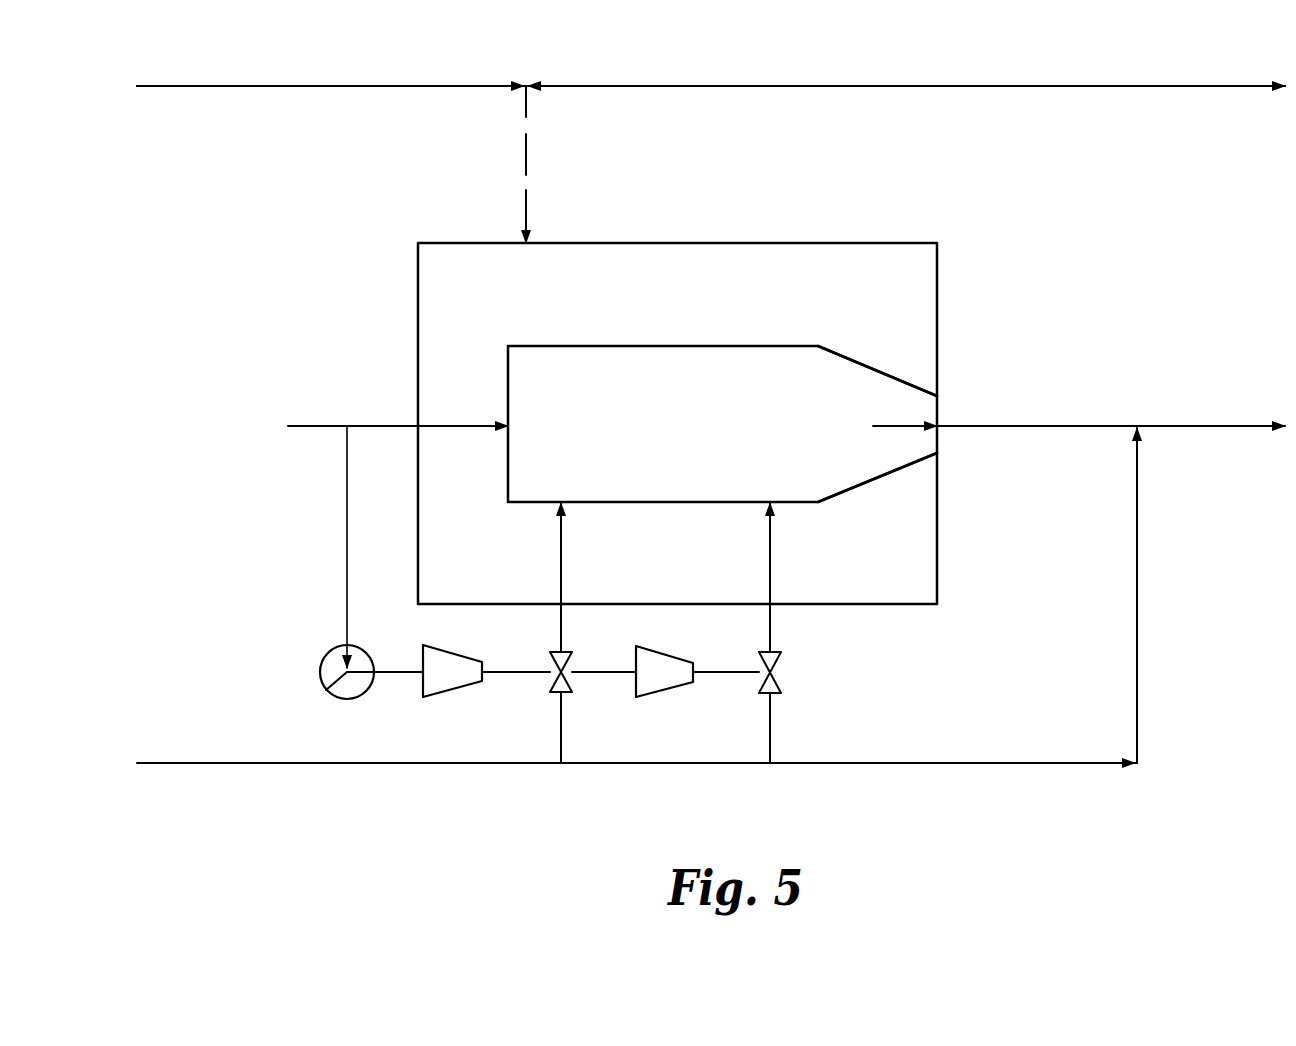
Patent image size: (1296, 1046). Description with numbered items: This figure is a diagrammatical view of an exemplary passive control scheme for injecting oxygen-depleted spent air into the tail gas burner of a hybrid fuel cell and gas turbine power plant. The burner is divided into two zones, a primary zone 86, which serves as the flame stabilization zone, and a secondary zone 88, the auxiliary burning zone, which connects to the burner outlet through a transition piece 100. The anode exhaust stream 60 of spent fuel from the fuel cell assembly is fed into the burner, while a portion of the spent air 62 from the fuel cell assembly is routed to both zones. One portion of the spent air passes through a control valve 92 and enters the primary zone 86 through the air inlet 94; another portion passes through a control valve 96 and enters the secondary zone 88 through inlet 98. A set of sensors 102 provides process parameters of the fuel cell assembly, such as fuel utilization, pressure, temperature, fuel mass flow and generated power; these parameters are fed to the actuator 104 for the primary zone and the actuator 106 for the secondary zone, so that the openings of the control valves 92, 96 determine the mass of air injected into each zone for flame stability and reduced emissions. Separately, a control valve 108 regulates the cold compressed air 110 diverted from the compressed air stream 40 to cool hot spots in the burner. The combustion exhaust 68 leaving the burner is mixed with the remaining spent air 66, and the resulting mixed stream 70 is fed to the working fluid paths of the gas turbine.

The compressed air stream 40 is at (278, 86).
The anode exhaust stream 60 is at (305, 428).
The spent air 62 is at (273, 764).
The remaining spent air 66 is at (953, 764).
The combustion exhaust 68 is at (1054, 426).
The mixed stream 70 is at (1218, 426).
The primary zone 86 is at (625, 366).
The secondary zone 88 is at (765, 370).
The control valve 92 is at (550, 686).
The air inlet 94 is at (570, 488).
The control valve 96 is at (781, 688).
The inlet 98 is at (772, 490).
The transition piece 100 is at (912, 392).
The sensors 102 is at (330, 690).
The actuator 104 is at (427, 689).
The actuator 106 is at (640, 689).
The control valve 108 is at (526, 86).
The cold compressed air 110 is at (526, 165).